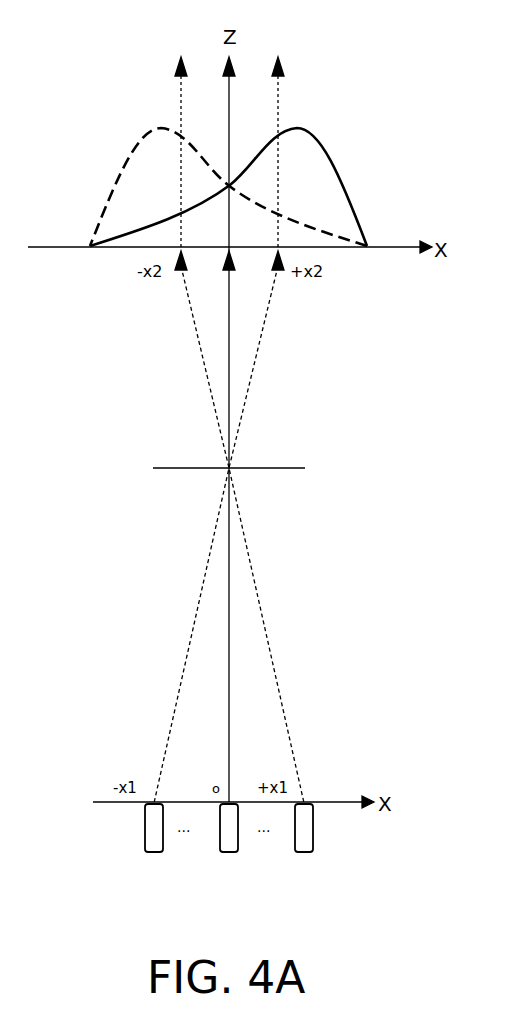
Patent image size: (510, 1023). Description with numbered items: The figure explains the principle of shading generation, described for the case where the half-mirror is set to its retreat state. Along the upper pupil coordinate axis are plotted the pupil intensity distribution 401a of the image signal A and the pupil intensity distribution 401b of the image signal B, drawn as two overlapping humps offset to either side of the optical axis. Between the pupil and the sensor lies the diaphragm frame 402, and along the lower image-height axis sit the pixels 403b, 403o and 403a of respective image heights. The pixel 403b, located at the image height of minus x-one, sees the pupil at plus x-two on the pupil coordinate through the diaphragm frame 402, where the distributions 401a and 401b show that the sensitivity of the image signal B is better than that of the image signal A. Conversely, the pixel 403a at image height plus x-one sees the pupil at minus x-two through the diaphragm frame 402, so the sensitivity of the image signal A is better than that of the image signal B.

The pupil intensity distribution of the image signal A 401a is at (118, 169).
The pupil intensity distribution of the image signal B 401b is at (337, 170).
The diaphragm frame 402 is at (172, 463).
The pixel 403a is at (303, 853).
The pixel 403b is at (155, 853).
The pixel 403o is at (227, 855).